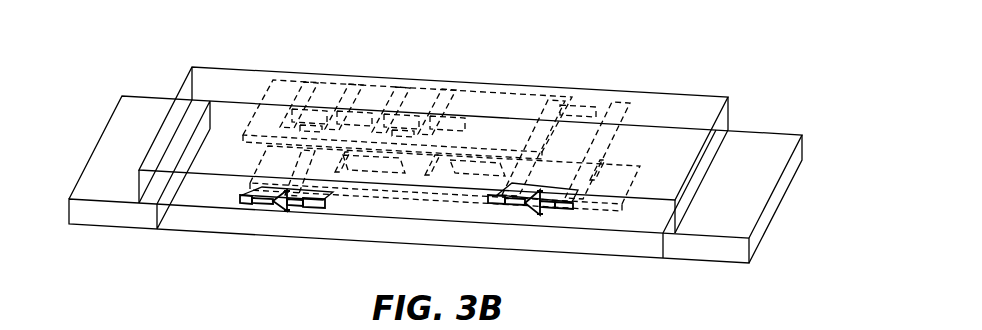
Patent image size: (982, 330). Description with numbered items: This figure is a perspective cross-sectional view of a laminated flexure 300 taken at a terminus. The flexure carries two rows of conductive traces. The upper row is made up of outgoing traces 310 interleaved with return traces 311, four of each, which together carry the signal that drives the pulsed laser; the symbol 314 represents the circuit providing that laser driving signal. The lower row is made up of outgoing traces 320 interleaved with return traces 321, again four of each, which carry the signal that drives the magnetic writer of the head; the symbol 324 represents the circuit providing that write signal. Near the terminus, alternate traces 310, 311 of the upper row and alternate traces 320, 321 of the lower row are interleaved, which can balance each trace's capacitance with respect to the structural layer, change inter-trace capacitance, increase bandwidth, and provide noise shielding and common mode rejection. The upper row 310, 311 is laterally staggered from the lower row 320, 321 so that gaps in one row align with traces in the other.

The laminated flexure 300 is at (648, 71).
The outgoing traces 310 is at (577, 190).
The return traces 311 is at (512, 183).
The circuit providing the signal to drive the pulsed laser 314 is at (532, 212).
The outgoing traces 320 is at (335, 193).
The return traces 321 is at (262, 187).
The circuit providing the signal to drive the magnetic writer 324 is at (285, 212).